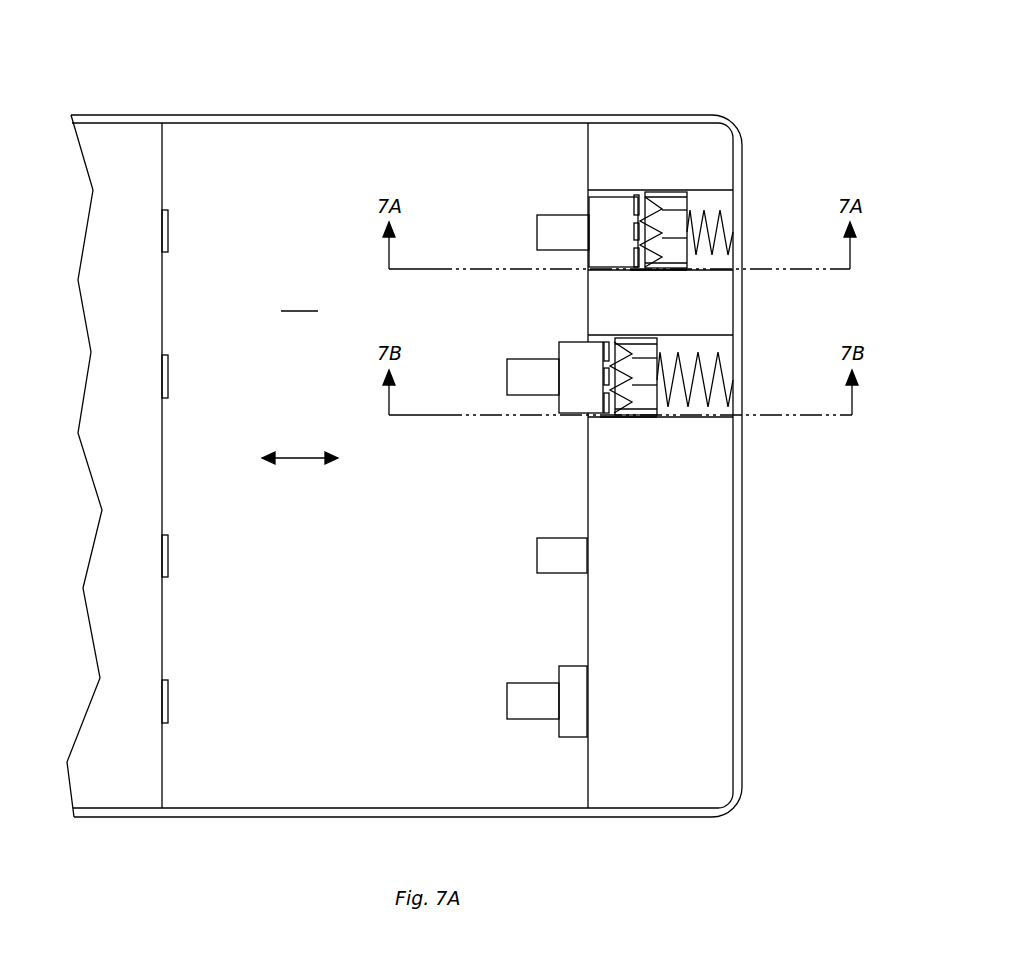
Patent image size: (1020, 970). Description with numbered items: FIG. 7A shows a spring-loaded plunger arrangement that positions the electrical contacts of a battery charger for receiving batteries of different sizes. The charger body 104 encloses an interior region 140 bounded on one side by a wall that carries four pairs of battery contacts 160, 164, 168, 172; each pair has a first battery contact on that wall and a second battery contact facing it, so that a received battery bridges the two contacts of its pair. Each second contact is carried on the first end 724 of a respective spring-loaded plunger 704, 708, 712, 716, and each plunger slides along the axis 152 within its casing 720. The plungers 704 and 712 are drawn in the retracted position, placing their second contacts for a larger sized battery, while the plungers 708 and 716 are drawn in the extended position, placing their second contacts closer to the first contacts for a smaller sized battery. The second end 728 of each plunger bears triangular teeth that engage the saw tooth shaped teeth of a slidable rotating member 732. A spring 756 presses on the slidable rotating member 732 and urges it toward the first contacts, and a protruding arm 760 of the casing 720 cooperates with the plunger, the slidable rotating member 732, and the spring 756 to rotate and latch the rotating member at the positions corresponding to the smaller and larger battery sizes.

The housing 104 is at (210, 818).
The interior cavity 140 is at (299, 299).
The axis 152 is at (300, 457).
The battery contacts 160 is at (168, 240).
The battery contacts 164 is at (168, 385).
The battery contacts 168 is at (168, 565).
The battery contacts 172 is at (168, 710).
The spring-loaded plunger 704 is at (558, 268).
The spring-loaded plunger 708 is at (556, 430).
The spring-loaded plunger 712 is at (552, 592).
The spring-loaded plunger 716 is at (533, 744).
The casing 720 is at (618, 190).
The first end 724 is at (600, 210).
The second end 728 is at (642, 195).
The slidable rotating member 732 is at (680, 192).
The spring 756 is at (712, 224).
The protruding arm 760 is at (622, 270).